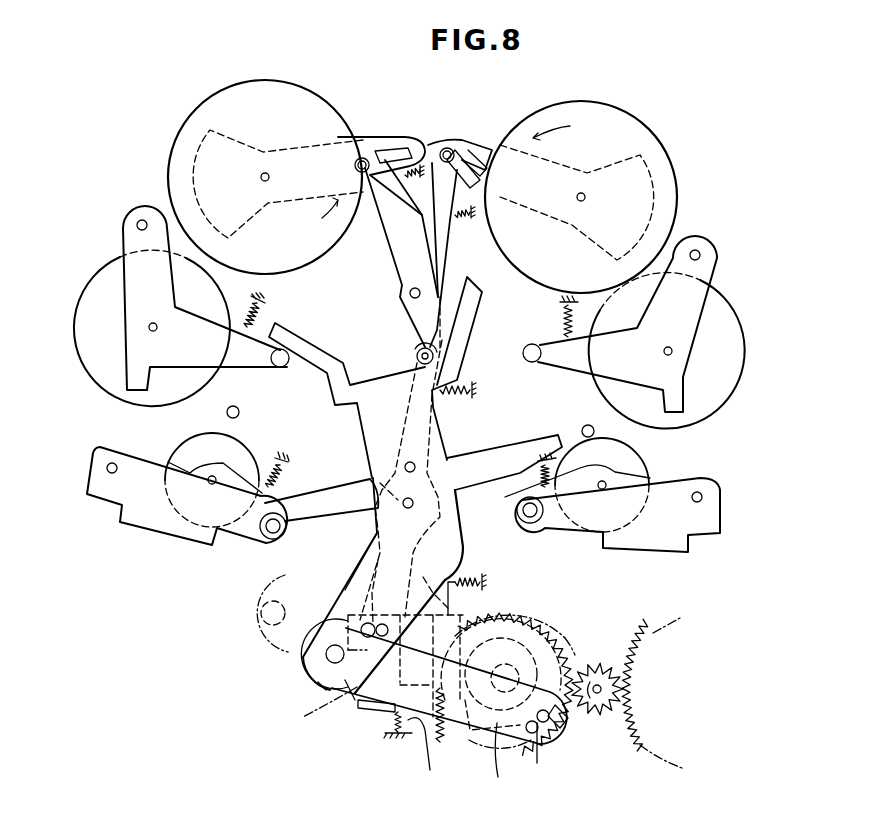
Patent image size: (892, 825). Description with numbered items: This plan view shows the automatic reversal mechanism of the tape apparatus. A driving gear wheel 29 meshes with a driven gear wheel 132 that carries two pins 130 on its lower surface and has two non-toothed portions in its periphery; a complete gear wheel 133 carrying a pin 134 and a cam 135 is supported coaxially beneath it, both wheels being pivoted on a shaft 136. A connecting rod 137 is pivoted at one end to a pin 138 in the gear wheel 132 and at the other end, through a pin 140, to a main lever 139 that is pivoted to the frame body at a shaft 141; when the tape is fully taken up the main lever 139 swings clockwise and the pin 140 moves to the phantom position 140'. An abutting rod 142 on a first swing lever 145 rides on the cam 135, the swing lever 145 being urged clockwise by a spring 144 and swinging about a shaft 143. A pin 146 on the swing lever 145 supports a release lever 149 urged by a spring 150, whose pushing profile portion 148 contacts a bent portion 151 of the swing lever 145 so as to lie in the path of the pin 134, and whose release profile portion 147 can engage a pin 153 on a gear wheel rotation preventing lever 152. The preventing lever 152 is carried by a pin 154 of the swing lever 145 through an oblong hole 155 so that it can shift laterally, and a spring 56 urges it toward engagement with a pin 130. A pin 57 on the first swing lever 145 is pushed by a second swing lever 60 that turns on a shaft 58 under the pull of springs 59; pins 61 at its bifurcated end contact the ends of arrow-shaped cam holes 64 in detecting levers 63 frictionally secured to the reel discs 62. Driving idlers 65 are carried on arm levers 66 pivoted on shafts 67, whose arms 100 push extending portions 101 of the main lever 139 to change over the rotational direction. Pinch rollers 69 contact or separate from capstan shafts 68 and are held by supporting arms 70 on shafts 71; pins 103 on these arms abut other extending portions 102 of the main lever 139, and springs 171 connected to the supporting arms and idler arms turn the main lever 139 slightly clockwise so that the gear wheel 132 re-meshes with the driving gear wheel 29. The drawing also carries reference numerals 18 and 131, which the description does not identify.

The main gear 18 is at (660, 618).
The driving gear wheel 29 is at (603, 665).
The spring 56 is at (470, 578).
The pin 57 is at (416, 355).
The shaft 58 is at (409, 293).
The springs 59 is at (405, 172).
The second swing lever 60 is at (400, 222).
The pins 61 is at (355, 165).
The reel discs 62 is at (322, 110).
The detecting levers 63 is at (368, 136).
The arrow-shaped cam holes 64 is at (466, 158).
The driving idlers 65 is at (92, 300).
The arm levers 66 is at (140, 250).
The shaft 67 is at (143, 220).
The capstan shafts 68 is at (240, 412).
The pinch rollers 69 is at (198, 445).
The supporting arms 70 is at (178, 530).
The shafts 71 is at (112, 462).
The arms 100 is at (286, 365).
The extending portions 101 is at (300, 335).
The other extending portions 102 is at (305, 518).
The pins 103 is at (270, 538).
The pins 130 is at (490, 634).
The gear sector 131 is at (507, 659).
The driven gear wheel 132 is at (550, 630).
The complete gear wheel 133 is at (570, 646).
The pin 134 is at (508, 752).
The cam 135 is at (444, 738).
The shaft 136 is at (501, 674).
The connecting rod 137 is at (492, 760).
The pin 138 is at (566, 717).
The main lever 139 is at (462, 548).
The pin 140 is at (406, 681).
The position of pin 140' is at (242, 613).
The shaft 141 is at (416, 465).
The abutting rod 142 is at (492, 697).
The shaft 143 is at (370, 478).
The spring 144 is at (458, 385).
The first swing lever 145 is at (338, 570).
The pin 146 is at (315, 718).
The release profile portion 147 is at (318, 682).
The pushing profile portion 148 is at (428, 745).
The release lever 149 is at (372, 712).
The spring 150 is at (403, 738).
The bent portion 151 is at (352, 702).
The gear wheel rotation preventing lever 152 is at (436, 592).
The pin 153 is at (392, 633).
The pin 154 is at (375, 622).
The oblong hole 155 is at (390, 590).
The springs 171 is at (262, 315).